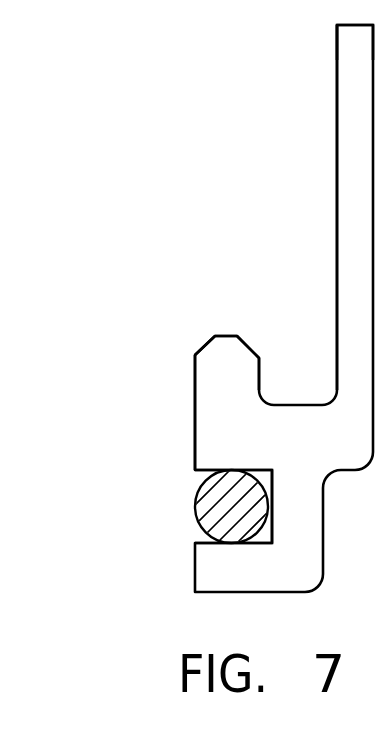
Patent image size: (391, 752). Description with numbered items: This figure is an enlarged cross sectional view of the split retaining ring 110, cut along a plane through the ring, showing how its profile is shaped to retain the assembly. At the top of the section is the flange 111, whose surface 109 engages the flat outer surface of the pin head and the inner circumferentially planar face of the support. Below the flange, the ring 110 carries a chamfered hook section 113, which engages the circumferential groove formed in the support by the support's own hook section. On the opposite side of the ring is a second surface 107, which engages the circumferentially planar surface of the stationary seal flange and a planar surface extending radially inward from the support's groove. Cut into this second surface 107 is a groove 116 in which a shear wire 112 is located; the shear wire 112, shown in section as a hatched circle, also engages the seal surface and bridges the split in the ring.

The second surface 107 is at (195, 418).
The surface 109 is at (336, 237).
The split retaining ring 110 is at (297, 148).
The flange 111 is at (336, 60).
The shear wire 112 is at (197, 521).
The hook section 113 is at (227, 372).
The groove 116 is at (185, 489).